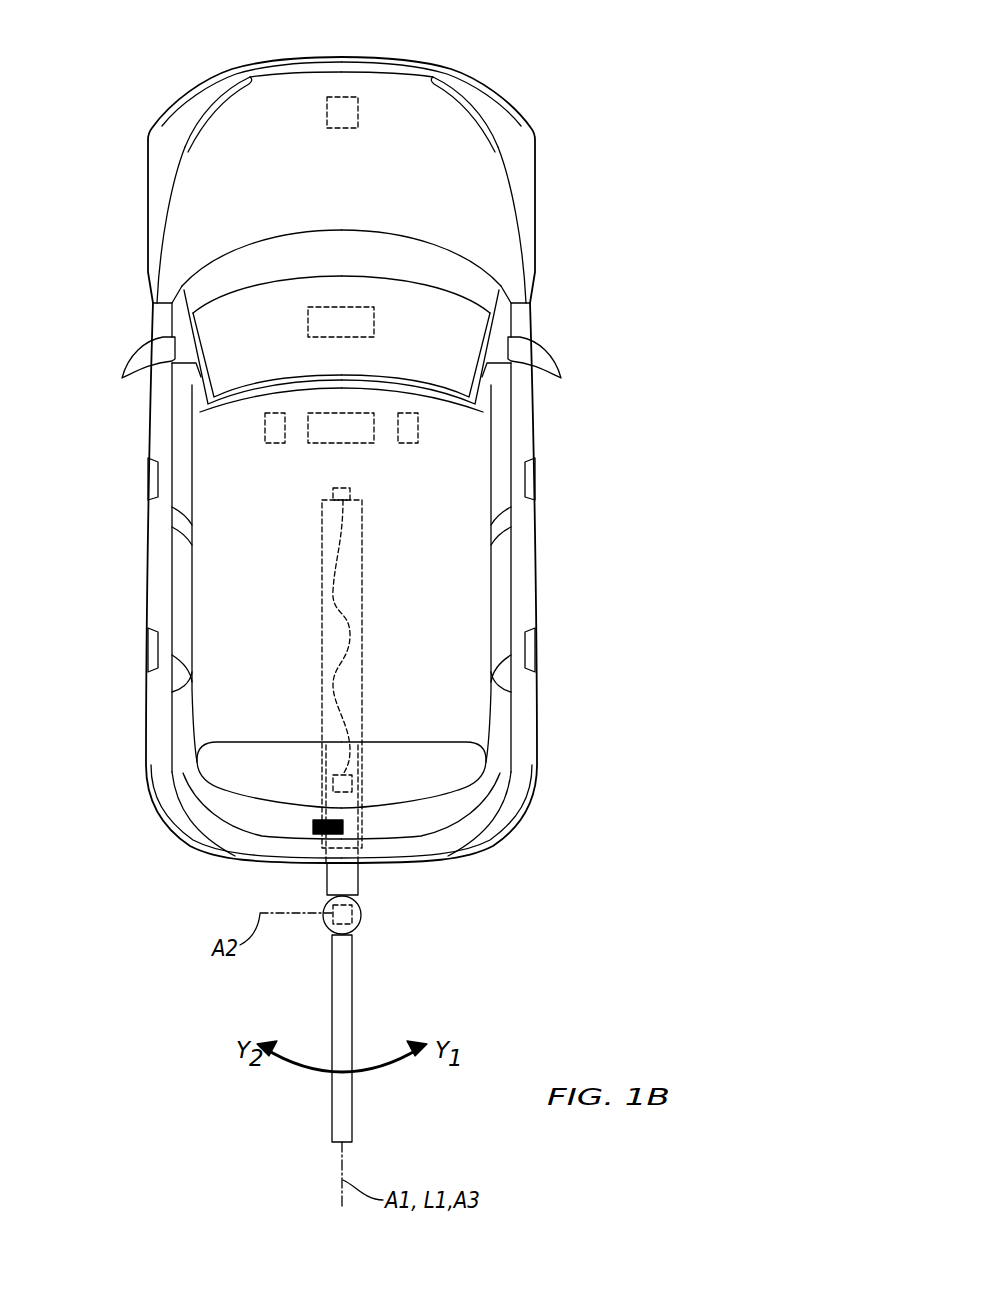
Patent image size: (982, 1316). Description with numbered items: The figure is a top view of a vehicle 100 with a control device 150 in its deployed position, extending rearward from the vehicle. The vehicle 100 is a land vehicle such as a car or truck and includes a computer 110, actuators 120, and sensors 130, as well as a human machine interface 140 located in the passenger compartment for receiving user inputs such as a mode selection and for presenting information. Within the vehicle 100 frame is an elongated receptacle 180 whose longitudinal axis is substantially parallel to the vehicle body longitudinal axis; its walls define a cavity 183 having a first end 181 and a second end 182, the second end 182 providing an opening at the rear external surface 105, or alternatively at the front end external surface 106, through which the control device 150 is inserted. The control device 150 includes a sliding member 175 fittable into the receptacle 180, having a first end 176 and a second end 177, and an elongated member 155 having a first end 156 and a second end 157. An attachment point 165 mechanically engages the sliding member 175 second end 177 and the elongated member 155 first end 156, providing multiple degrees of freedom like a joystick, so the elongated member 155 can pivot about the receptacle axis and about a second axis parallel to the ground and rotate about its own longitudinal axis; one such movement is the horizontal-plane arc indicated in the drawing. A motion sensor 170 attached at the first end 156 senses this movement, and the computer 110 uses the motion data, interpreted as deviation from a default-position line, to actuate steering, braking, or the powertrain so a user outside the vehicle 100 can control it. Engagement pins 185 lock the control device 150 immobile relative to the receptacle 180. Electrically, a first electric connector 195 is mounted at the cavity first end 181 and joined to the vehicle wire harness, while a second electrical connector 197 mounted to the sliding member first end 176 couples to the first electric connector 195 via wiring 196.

The vehicle 100 is at (508, 818).
The external surface 105 is at (451, 861).
The front end external surface 106 is at (398, 58).
The computer 110 is at (366, 412).
The actuator 120 is at (263, 430).
The sensor 130 is at (333, 95).
The human machine interface 140 is at (335, 305).
The control device 150 is at (457, 972).
The elongated member 155 is at (353, 1090).
The first end 156 is at (352, 940).
The second end 157 is at (332, 1135).
The attachment point 165 is at (333, 932).
The motion sensor 170 is at (360, 932).
The sliding member 175 is at (326, 876).
The first end 176 is at (353, 780).
The second end 177 is at (360, 905).
The receptacle 180 is at (321, 690).
The first end 181 is at (363, 502).
The second end 182 is at (358, 805).
The cavity 183 is at (344, 670).
The engagement pin 185 is at (313, 824).
The first electric connector 195 is at (352, 490).
The wiring 196 is at (340, 577).
The second electrical connector 197 is at (333, 782).